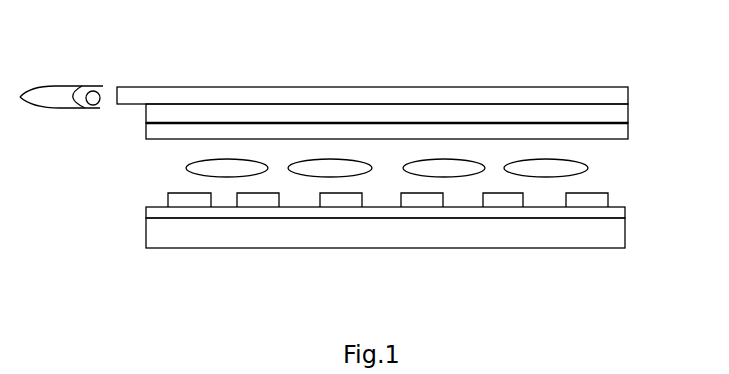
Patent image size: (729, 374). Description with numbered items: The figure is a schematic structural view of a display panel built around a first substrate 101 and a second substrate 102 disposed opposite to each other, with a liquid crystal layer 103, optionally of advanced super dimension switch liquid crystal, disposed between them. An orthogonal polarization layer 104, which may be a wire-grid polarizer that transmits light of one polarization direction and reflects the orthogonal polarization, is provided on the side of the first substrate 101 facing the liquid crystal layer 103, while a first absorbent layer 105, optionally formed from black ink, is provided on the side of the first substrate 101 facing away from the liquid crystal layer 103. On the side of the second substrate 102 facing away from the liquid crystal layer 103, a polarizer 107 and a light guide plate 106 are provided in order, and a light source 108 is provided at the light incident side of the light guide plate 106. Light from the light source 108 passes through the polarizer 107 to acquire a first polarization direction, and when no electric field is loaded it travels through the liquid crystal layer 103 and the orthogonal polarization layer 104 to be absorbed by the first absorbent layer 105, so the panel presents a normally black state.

The first substrate 101 is at (221, 211).
The second substrate 102 is at (600, 131).
The liquid crystal layer 103 is at (608, 167).
The orthogonal polarization layer 104 is at (590, 201).
The first absorbent layer 105 is at (590, 231).
The light guide plate 106 is at (237, 98).
The polarizer 107 is at (342, 117).
The light source 108 is at (93, 96).